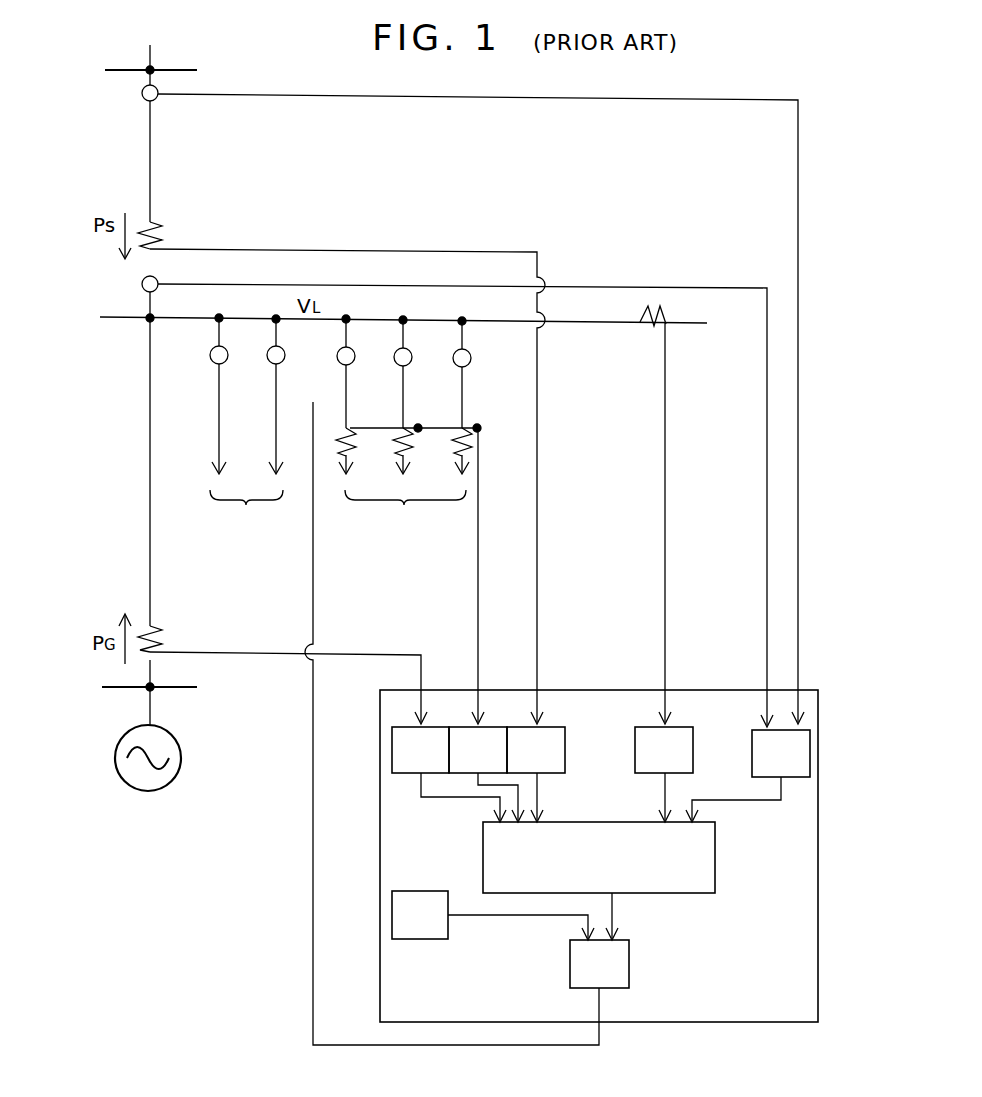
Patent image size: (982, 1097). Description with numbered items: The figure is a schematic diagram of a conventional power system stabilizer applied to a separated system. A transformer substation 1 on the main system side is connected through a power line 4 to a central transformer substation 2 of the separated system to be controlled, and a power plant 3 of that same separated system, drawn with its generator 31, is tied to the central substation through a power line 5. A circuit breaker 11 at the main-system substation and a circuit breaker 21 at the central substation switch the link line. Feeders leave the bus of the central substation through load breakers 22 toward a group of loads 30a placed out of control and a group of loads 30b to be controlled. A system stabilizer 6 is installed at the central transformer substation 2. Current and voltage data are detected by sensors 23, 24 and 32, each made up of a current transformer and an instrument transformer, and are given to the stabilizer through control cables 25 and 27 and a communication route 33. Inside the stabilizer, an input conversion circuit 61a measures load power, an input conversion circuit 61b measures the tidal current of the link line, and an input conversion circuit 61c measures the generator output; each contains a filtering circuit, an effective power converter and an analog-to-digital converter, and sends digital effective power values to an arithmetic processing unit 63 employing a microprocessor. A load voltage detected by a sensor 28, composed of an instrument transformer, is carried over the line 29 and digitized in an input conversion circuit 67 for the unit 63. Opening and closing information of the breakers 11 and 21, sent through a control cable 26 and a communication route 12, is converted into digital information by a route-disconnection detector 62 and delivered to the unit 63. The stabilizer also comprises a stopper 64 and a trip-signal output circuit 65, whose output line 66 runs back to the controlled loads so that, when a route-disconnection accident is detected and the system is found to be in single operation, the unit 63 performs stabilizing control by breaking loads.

The transformer substation 1 is at (176, 70).
The circuit breaker 11 is at (142, 98).
The communication route 12 is at (486, 94).
The power line 4 is at (148, 173).
The sensor 23 is at (162, 242).
The control cable 25 is at (446, 248).
The circuit breaker 21 is at (141, 285).
The control cable 26 is at (578, 286).
The central transformer substation 2 is at (126, 318).
The sensor 28 is at (644, 333).
The signal line from voltage detector 29 is at (666, 511).
The power line 5 is at (148, 441).
The load circuit breakers 22 is at (451, 359).
The group of loads placed out of control 30a is at (246, 433).
The group of loads to be controlled 30b is at (404, 434).
The sensor 24 is at (338, 452).
The control cable 27 is at (477, 590).
The sensor 32 is at (162, 640).
The communication route 33 is at (225, 653).
The power plant 3 is at (123, 692).
The generator 31 is at (140, 789).
The control output line 66 is at (310, 928).
The system stabilizer 6 is at (700, 1025).
The input conversion circuit 61c is at (449, 774).
The input conversion circuit 61a is at (486, 774).
The input conversion circuit 61b is at (536, 774).
The input conversion circuit 67 is at (664, 774).
The route-disconnection detector 62 is at (748, 776).
The arithmetic processing unit 63 is at (483, 852).
The stopper 64 is at (493, 915).
The trip-signal output circuit 65 is at (599, 964).